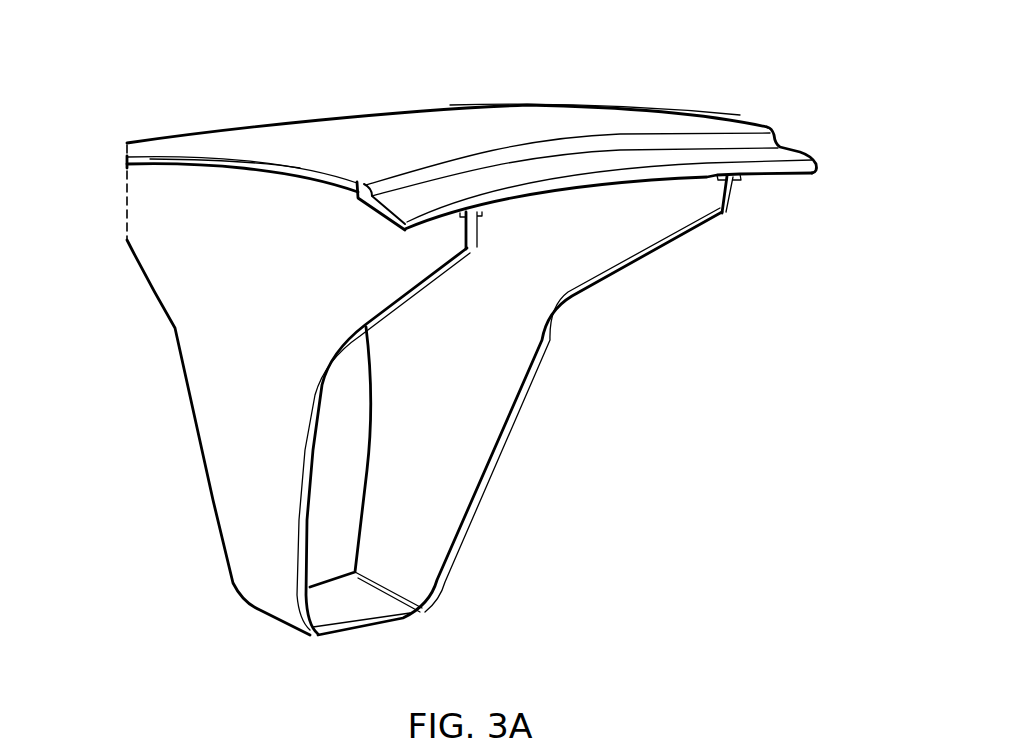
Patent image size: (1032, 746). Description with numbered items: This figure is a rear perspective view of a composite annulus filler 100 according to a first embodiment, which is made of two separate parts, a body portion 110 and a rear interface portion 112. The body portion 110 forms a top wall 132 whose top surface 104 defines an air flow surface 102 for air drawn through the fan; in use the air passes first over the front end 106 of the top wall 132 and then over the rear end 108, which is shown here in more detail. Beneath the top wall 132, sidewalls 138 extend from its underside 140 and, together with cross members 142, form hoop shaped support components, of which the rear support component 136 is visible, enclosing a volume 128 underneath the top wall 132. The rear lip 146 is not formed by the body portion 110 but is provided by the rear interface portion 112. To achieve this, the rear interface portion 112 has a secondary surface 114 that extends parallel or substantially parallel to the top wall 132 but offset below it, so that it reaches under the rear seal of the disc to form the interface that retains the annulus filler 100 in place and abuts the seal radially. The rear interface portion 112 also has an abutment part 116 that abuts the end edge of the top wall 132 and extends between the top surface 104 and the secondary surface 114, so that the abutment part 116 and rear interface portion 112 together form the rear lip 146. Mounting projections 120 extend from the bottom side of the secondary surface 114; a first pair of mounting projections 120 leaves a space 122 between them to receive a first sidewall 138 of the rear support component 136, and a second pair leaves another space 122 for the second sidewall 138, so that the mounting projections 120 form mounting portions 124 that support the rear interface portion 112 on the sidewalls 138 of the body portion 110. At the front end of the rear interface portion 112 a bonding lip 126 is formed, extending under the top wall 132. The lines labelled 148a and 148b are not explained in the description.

The annulus filler 100 is at (800, 98).
The air flow surface 102 is at (469, 319).
The top surface 104 is at (421, 118).
The front end 106 is at (54, 127).
The rear end 108 is at (808, 278).
The body portion 110 is at (452, 114).
The rear interface portion 112 is at (607, 160).
The secondary surface 114 is at (788, 152).
The abutment part 116 is at (713, 134).
The mounting projections 120 is at (483, 214).
The space 122 is at (731, 194).
The mounting portions 124 is at (486, 236).
The bonding lip 126 is at (363, 196).
The volume 128 is at (577, 434).
The top wall 132 is at (143, 159).
The rear support component 136 is at (334, 437).
The sidewalls 138 is at (243, 507).
The underside 140 is at (210, 167).
The cross members 142 is at (363, 623).
The rear lip 146 is at (676, 150).
The first flange 148a is at (527, 106).
The second flange 148b is at (253, 163).